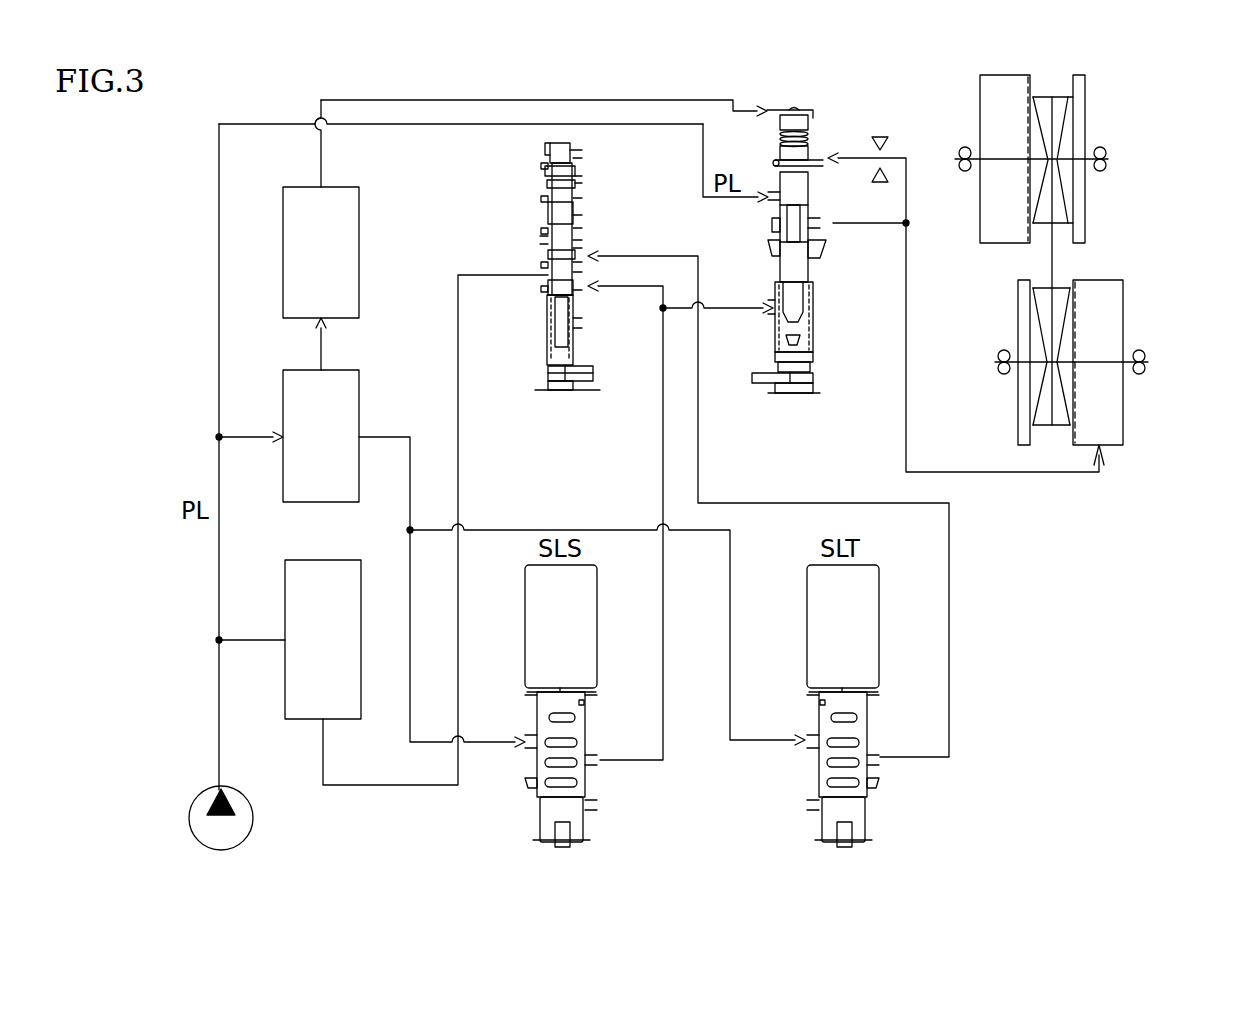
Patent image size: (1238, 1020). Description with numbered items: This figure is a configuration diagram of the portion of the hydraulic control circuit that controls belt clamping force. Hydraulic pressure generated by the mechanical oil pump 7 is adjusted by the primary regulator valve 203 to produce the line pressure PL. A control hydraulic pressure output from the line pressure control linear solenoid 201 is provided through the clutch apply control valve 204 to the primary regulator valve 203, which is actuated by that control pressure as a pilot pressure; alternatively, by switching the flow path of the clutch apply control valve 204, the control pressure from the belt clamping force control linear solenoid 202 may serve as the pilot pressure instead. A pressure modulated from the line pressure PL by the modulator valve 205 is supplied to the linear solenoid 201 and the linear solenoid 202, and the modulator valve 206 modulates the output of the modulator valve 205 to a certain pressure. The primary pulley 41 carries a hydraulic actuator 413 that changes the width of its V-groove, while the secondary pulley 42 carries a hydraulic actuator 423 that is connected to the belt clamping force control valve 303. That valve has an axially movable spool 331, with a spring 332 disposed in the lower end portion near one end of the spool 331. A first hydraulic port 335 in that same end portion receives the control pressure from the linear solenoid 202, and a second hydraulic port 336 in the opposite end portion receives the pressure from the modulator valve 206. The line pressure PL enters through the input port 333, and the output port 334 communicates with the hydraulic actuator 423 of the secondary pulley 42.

The oil pump 7 is at (195, 795).
The primary pulley 41 is at (1049, 250).
The secondary pulley 42 is at (1100, 337).
The hydraulic actuator 413 is at (993, 112).
The hydraulic actuator 423 is at (1107, 328).
The linear solenoid (SLT) 201 is at (871, 695).
The linear solenoid (SLS) 202 is at (605, 607).
The primary regulator valve 203 is at (285, 678).
The clutch apply control valve 204 is at (598, 218).
The modulator valve 205 is at (361, 410).
The modulator valve 206 is at (361, 242).
The belt clamping force control valve 303 is at (806, 232).
The spool 331 is at (800, 262).
The spring 332 is at (812, 318).
The input port 333 is at (768, 203).
The output port 334 is at (818, 222).
The first hydraulic port 335 is at (768, 300).
The second hydraulic port 336 is at (770, 113).